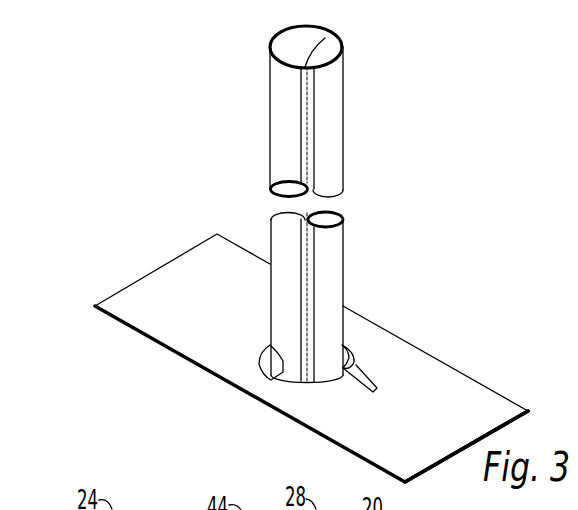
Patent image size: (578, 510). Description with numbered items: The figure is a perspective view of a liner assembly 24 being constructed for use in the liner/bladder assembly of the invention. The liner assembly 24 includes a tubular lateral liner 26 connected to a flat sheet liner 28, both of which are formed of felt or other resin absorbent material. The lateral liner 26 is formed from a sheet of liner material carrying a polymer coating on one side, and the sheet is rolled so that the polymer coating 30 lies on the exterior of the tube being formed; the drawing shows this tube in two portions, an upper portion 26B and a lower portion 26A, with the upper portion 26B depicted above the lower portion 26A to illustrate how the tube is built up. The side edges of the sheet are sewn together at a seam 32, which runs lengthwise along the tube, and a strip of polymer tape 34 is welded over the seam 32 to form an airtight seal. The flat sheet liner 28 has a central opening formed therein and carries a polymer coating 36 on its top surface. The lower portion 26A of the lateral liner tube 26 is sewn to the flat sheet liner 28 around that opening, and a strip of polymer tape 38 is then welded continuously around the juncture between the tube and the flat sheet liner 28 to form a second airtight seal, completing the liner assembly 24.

The liner assembly 24 is at (416, 190).
The tubular lateral liner 26 is at (299, 106).
The lower post section 26A is at (314, 302).
The upper post section 26B is at (289, 105).
The flat sheet liner 28 is at (452, 375).
The polymer coating 30 is at (271, 45).
The seam 32 is at (330, 34).
The strip of polymer tape 34 is at (308, 257).
The polymer coating 36 is at (447, 462).
The strip of polymer tape 38 is at (265, 357).